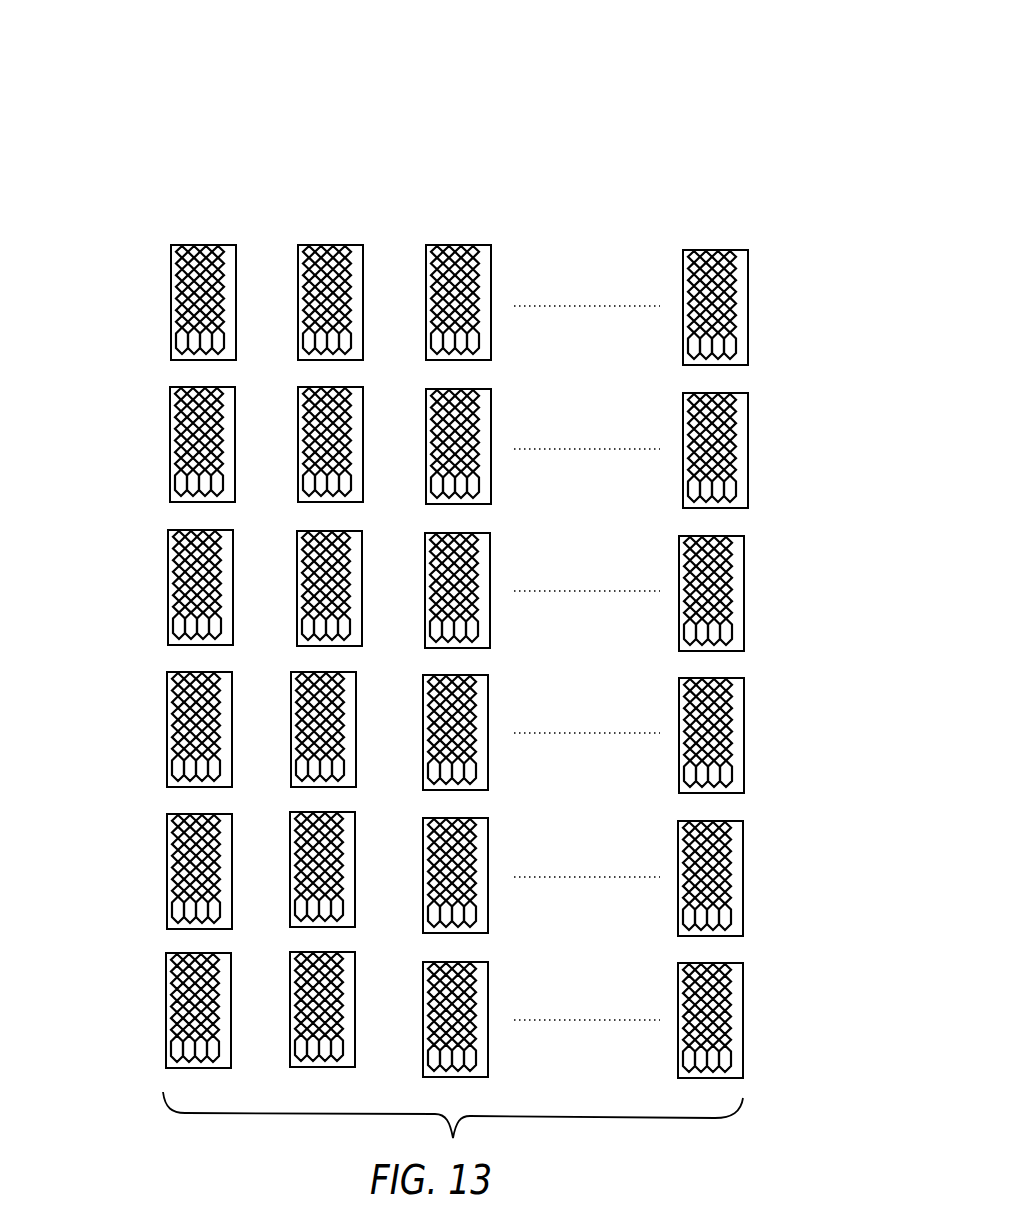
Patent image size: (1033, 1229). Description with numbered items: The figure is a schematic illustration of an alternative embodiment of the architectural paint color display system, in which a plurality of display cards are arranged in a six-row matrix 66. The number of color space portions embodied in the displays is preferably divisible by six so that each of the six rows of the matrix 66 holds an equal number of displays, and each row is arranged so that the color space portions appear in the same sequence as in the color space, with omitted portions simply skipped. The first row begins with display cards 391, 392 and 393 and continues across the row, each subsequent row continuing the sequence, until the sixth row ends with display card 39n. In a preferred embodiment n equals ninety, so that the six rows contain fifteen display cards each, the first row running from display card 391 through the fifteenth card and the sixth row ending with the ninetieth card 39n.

The six-row matrix 66 is at (636, 78).
The display card 391 is at (183, 245).
The display card 392 is at (311, 245).
The display card 393 is at (439, 245).
The display card 39n is at (743, 1017).